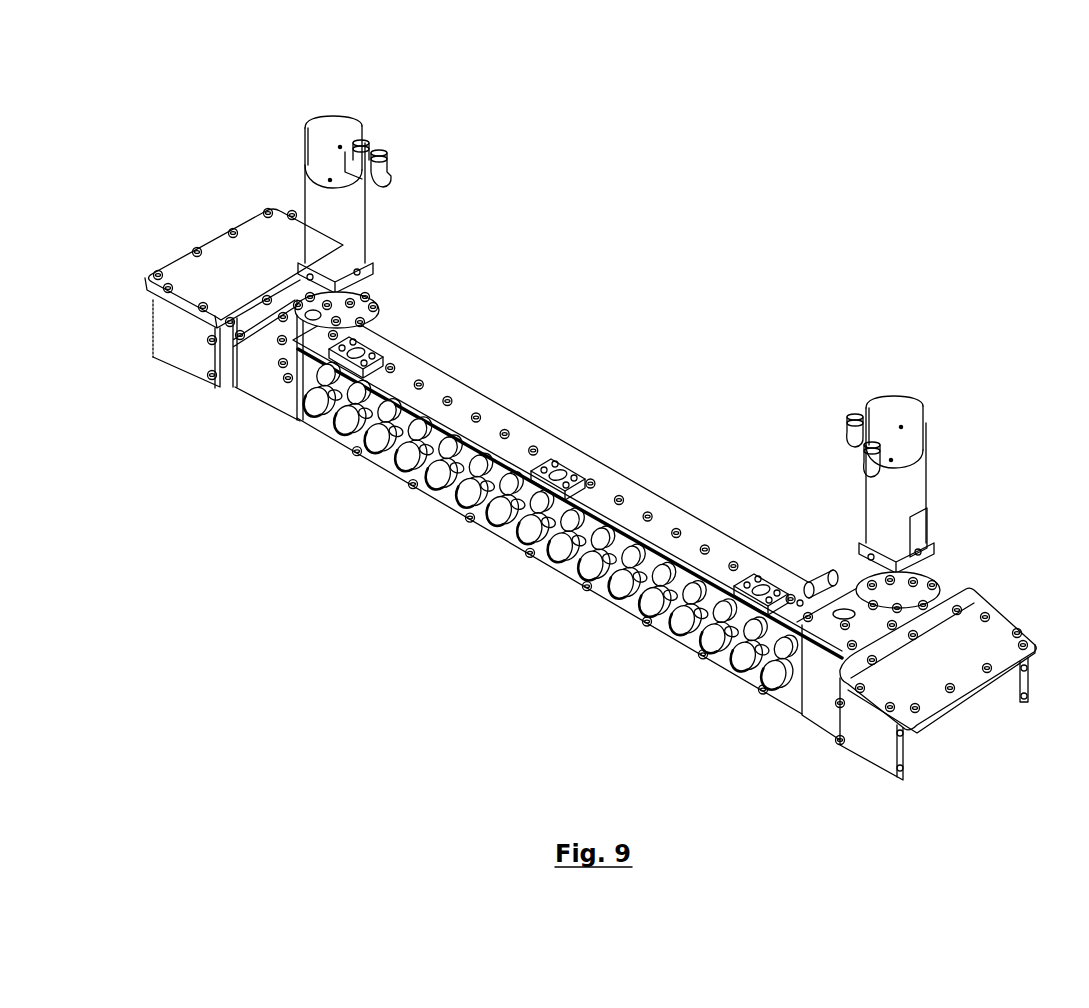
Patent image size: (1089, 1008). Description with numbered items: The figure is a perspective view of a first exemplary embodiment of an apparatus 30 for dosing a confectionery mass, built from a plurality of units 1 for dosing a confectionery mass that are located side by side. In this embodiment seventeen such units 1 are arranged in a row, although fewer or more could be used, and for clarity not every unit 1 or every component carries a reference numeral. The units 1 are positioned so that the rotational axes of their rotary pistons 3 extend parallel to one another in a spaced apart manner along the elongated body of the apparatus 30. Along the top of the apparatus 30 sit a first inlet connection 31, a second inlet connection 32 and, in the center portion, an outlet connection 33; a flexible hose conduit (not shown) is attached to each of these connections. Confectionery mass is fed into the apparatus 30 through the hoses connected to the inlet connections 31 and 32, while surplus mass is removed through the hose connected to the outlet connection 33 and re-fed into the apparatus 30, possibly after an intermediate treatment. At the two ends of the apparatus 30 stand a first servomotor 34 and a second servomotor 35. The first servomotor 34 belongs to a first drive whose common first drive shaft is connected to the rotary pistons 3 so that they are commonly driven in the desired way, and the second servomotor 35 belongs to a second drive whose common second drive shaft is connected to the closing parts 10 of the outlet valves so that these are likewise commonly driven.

The unit for dosing a confectionery mass 1 is at (317, 422).
The rotary piston 3 is at (405, 430).
The closing part 10 is at (550, 515).
The apparatus 30 is at (538, 176).
The first inlet connection 31 is at (372, 335).
The second inlet connection 32 is at (766, 588).
The outlet connection 33 is at (560, 462).
The first servomotor 34 is at (913, 442).
The second servomotor 35 is at (323, 117).